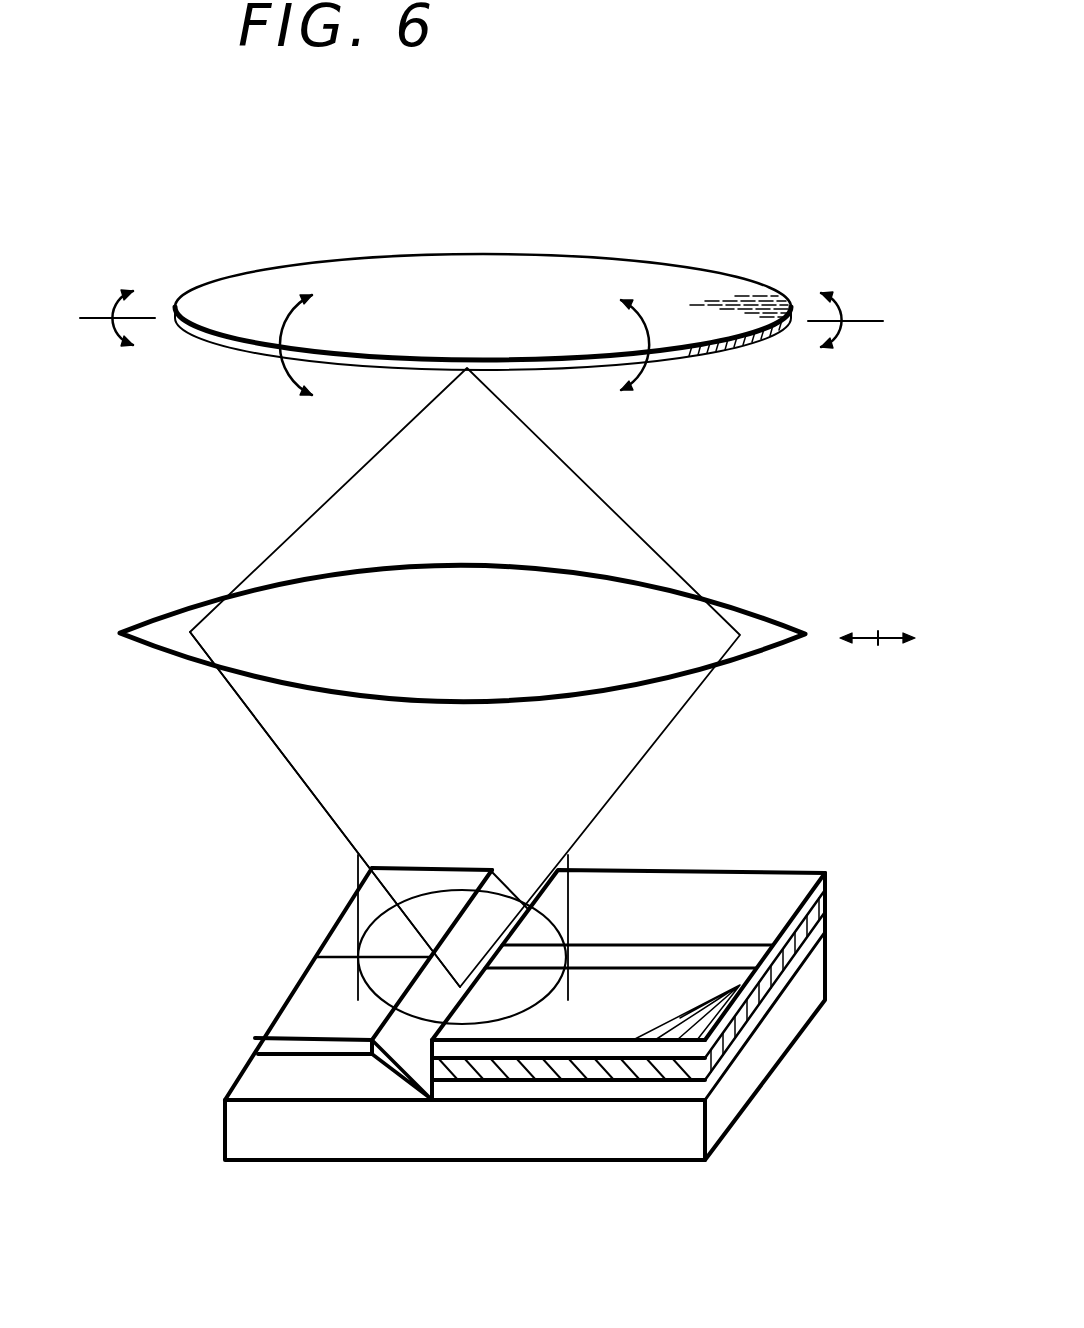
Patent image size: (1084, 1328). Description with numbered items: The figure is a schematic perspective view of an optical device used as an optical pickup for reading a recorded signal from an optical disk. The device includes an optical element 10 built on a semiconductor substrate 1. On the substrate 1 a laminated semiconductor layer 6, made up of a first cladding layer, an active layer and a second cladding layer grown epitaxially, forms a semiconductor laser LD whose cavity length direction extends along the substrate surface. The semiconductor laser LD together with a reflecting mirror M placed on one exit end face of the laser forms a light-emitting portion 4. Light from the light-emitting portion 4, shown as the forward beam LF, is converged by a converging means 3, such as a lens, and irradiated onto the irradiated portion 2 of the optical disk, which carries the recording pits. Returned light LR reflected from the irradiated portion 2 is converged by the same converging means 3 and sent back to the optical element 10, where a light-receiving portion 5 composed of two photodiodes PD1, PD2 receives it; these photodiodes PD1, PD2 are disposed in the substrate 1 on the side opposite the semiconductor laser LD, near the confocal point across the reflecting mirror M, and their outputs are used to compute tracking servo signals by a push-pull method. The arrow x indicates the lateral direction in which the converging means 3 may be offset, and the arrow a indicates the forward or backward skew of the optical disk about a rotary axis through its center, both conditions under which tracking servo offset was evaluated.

The semiconductor substrate 1 is at (808, 980).
The irradiated portion 2 is at (748, 322).
The converging means 3 is at (747, 623).
The light-emitting portion 4 is at (621, 922).
The light-receiving portion 5 is at (315, 961).
The laminated semiconductor layer 6 is at (832, 872).
The optical element 10 is at (497, 769).
The reflecting mirror M is at (480, 890).
The semiconductor laser LD is at (651, 946).
The photodiode PD1 is at (338, 943).
The photodiode PD2 is at (286, 1005).
The forward light beam LF is at (398, 873).
The returned light LR is at (325, 809).
The arrow a is at (481, 342).
The arrow x is at (877, 655).